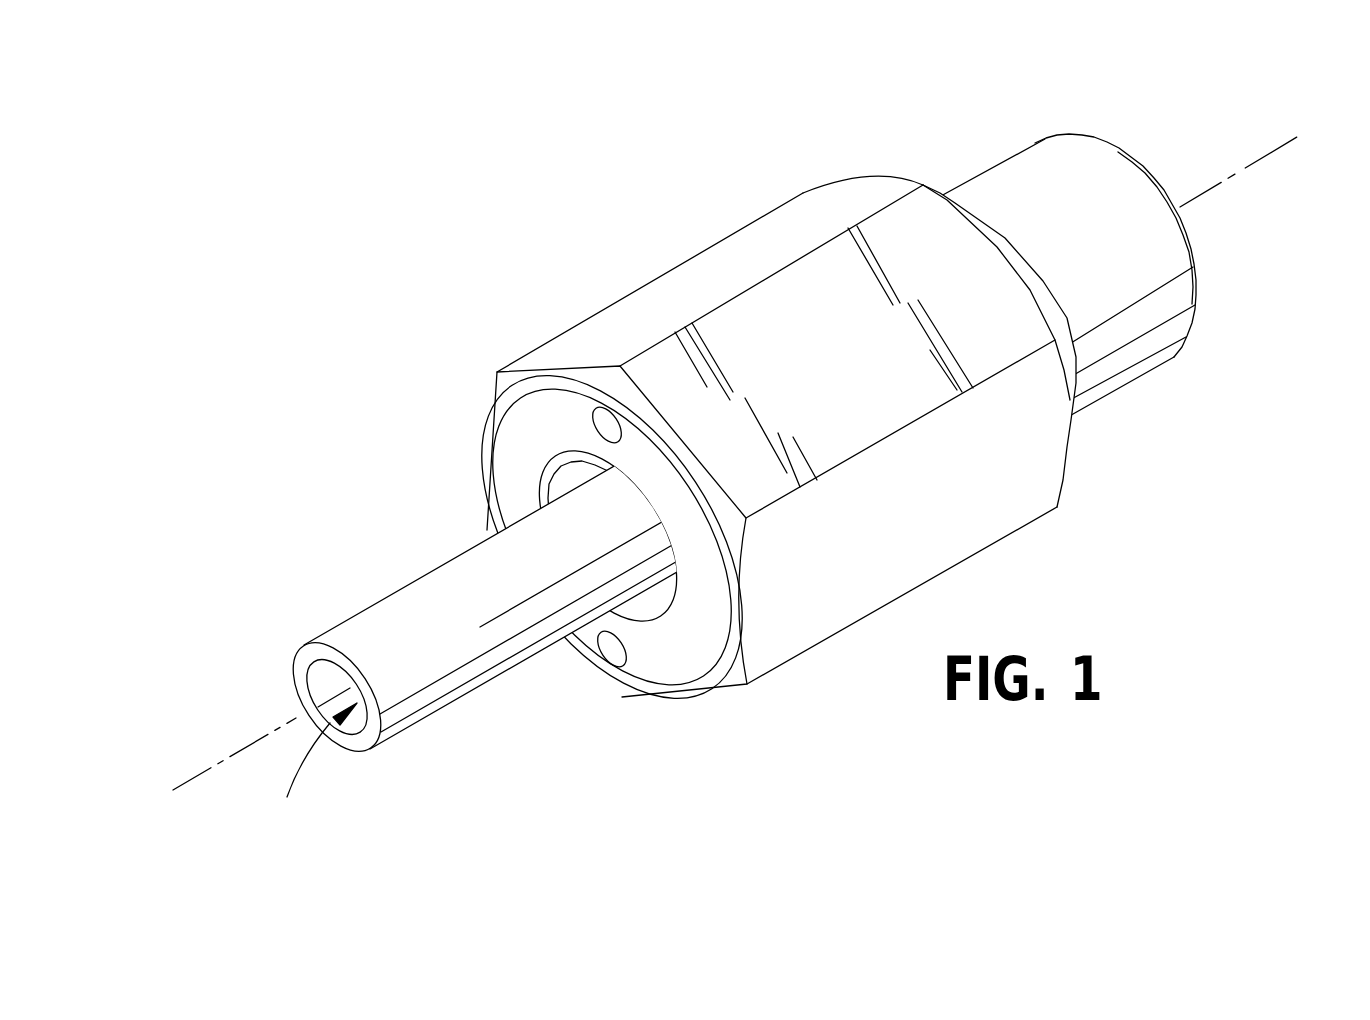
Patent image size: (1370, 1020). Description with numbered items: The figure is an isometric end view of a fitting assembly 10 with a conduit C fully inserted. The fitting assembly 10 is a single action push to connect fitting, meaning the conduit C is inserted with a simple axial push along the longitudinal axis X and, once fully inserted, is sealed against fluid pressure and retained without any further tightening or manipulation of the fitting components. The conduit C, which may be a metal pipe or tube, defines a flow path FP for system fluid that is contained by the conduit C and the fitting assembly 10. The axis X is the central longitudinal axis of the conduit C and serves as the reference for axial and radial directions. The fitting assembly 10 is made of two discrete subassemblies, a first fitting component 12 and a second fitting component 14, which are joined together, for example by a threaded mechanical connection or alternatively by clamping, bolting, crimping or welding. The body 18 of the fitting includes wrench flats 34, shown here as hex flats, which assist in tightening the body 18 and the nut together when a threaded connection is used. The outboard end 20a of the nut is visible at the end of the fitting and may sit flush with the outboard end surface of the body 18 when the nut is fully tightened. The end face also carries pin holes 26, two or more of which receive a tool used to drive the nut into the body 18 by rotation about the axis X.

The fitting assembly 10 is at (718, 441).
The first fitting component 12 is at (847, 163).
The second fitting component 14 is at (667, 667).
The body 18 is at (950, 570).
The outboard end 20a is at (512, 455).
The pin holes 26 is at (605, 425).
The wrench flats 34 is at (920, 222).
The conduit C is at (460, 693).
The longitudinal axis X is at (198, 775).
The flow path FP is at (311, 764).